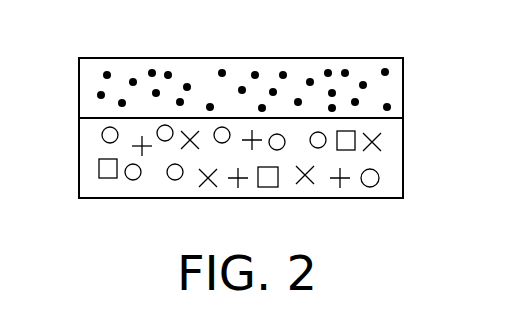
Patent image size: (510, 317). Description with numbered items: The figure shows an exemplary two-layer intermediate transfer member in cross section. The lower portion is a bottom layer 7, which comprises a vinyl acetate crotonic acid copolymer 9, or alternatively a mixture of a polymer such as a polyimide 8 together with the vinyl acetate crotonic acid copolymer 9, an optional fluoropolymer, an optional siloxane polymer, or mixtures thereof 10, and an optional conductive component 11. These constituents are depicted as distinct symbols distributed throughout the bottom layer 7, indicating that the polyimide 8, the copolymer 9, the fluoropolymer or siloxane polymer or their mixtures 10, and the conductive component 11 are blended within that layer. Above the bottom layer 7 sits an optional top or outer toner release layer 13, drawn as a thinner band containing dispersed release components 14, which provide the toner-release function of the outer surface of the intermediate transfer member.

The bottom layer 7 is at (403, 158).
The polyimide 8 is at (370, 188).
The vinyl acetate crotonic acid copolymer 9 is at (99, 167).
The optional fluoropolymer, optional siloxane polymer, or mixtures thereof 10 is at (205, 198).
The optional conductive component 11 is at (140, 145).
The top or outer toner release layer 13 is at (403, 95).
The release components 14 is at (168, 71).